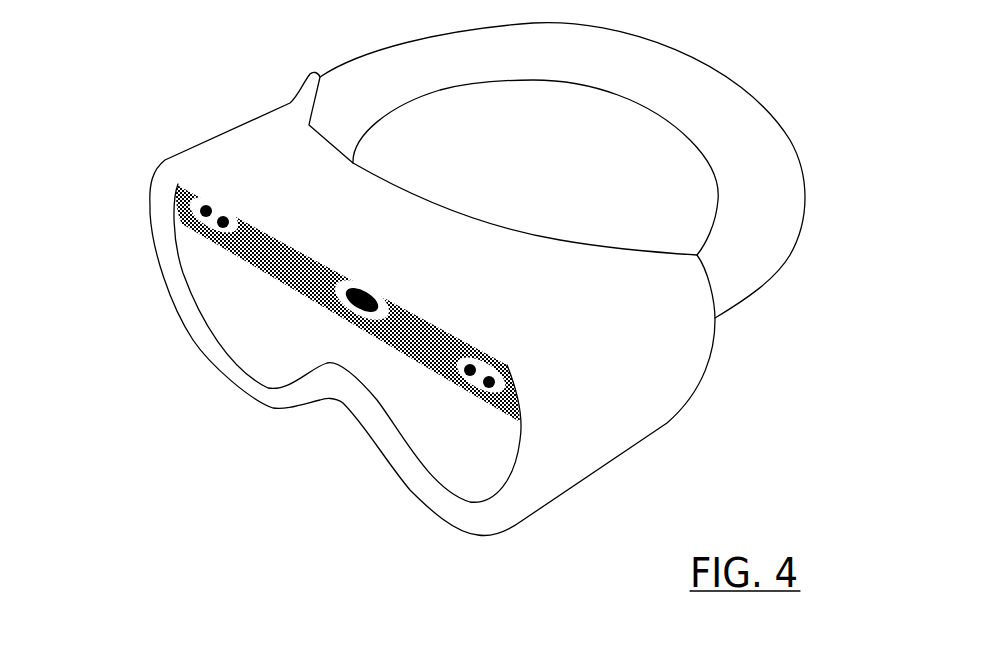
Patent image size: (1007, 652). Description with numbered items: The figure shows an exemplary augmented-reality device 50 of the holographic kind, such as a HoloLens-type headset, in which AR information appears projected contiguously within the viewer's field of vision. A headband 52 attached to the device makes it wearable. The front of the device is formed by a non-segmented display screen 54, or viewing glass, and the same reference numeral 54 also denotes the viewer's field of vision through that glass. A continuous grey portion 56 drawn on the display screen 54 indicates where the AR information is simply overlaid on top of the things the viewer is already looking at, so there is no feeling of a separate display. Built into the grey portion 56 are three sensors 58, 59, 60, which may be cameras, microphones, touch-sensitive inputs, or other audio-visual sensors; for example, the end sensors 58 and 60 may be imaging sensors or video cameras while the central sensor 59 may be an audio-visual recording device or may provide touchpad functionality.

The AR device 50 is at (450, 309).
The headband 52 is at (790, 70).
The display screen 54 is at (136, 278).
The continuous grey portion 56 is at (424, 349).
The sensor 58 is at (221, 258).
The central sensor 59 is at (367, 337).
The sensor 60 is at (484, 406).